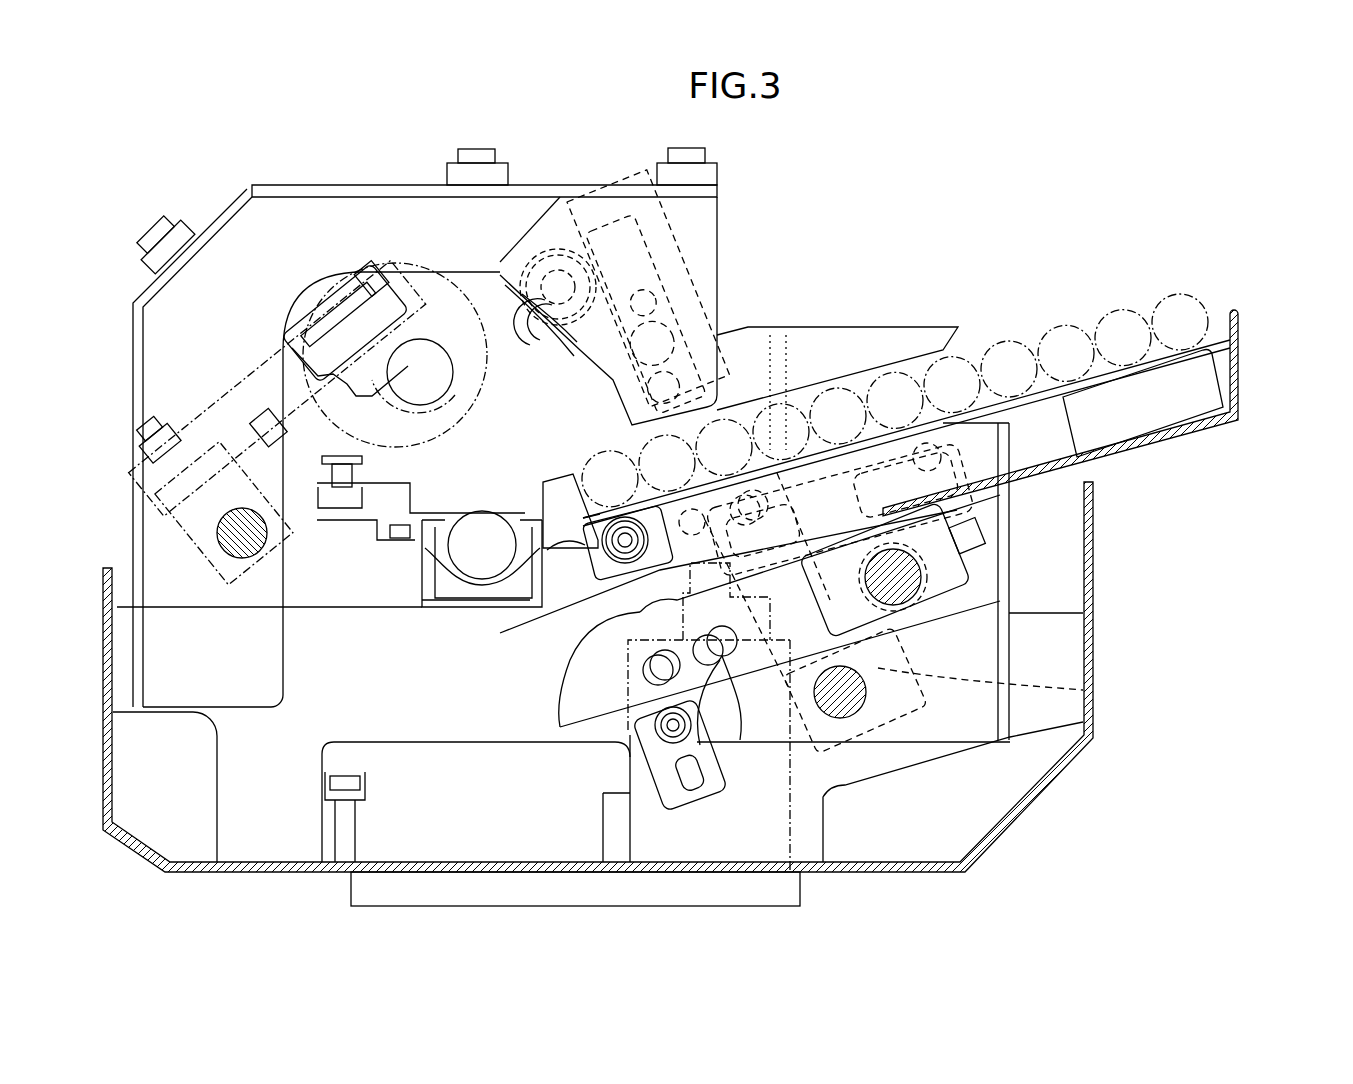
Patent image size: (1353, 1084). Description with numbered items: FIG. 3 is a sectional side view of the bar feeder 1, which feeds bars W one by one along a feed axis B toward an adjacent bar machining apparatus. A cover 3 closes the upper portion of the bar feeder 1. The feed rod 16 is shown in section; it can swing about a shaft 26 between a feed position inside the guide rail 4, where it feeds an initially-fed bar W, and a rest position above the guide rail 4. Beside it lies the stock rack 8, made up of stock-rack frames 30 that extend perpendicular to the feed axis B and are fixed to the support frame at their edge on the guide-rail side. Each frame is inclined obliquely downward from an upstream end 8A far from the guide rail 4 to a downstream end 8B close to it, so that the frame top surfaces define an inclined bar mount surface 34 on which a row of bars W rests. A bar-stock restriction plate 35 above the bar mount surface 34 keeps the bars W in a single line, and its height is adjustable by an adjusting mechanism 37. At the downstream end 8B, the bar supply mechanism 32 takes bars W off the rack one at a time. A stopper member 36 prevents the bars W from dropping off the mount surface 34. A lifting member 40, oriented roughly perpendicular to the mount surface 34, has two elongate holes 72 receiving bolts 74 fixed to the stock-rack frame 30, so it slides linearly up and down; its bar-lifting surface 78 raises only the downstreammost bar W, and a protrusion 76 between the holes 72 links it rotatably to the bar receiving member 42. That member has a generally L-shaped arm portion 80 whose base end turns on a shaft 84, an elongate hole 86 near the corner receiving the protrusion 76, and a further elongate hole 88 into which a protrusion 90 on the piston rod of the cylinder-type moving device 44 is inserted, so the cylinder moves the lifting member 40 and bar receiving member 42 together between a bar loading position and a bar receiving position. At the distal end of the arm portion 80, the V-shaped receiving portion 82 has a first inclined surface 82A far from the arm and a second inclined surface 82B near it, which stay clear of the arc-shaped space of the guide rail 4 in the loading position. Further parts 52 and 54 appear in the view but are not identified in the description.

The bar feeder 1 is at (1000, 202).
The cover 3 is at (333, 195).
The guide rail 4 is at (435, 512).
The stock rack 8 is at (1243, 363).
The upstream of the mount surface 8A is at (1218, 285).
The downstream of the mount surface 8B is at (575, 466).
The feed rod 16 is at (418, 372).
The shaft 26 is at (233, 545).
The stock-rack frames 30 is at (1040, 440).
The bar supply mechanism 32 is at (612, 722).
The bar mount surface 34 is at (1048, 385).
The bar-stock restriction plate 35 is at (822, 355).
The stopper member 36 is at (560, 492).
The adjusting mechanism 37 is at (525, 232).
The lifting member 40 is at (708, 790).
The bar receiving member 42 is at (640, 690).
The moving device 44 is at (768, 830).
The support block 52 is at (880, 710).
The guide line 54 is at (1083, 690).
The elongate holes 72 is at (640, 590).
The bolts 74 is at (540, 604).
The protrusion 76 is at (596, 727).
The bar-lifting surface 78 is at (591, 470).
The arm portion 80 is at (841, 560).
The receiving portion 82 is at (447, 603).
The first inclined surface 82A is at (466, 526).
The second inclined surface 82B is at (490, 550).
The shaft 84 is at (920, 580).
The elongate hole 86 is at (653, 670).
The elongate hole 88 is at (737, 700).
The protrusion 90 is at (718, 650).
The bar W is at (1175, 292).
The feed axis B is at (500, 598).